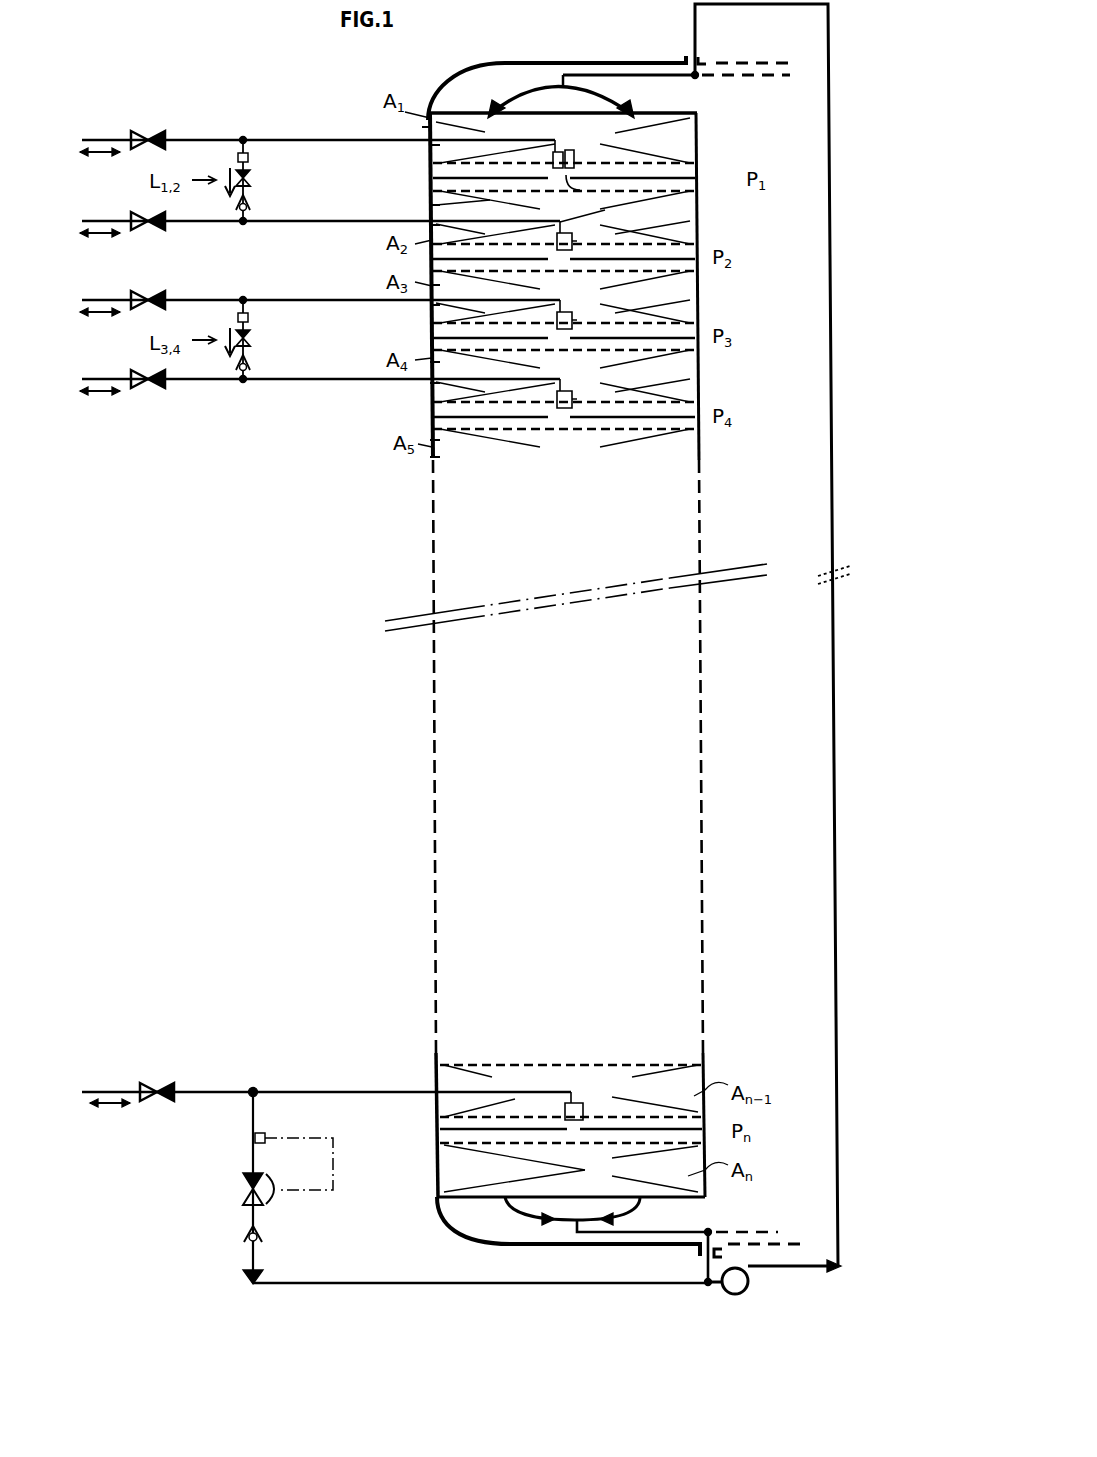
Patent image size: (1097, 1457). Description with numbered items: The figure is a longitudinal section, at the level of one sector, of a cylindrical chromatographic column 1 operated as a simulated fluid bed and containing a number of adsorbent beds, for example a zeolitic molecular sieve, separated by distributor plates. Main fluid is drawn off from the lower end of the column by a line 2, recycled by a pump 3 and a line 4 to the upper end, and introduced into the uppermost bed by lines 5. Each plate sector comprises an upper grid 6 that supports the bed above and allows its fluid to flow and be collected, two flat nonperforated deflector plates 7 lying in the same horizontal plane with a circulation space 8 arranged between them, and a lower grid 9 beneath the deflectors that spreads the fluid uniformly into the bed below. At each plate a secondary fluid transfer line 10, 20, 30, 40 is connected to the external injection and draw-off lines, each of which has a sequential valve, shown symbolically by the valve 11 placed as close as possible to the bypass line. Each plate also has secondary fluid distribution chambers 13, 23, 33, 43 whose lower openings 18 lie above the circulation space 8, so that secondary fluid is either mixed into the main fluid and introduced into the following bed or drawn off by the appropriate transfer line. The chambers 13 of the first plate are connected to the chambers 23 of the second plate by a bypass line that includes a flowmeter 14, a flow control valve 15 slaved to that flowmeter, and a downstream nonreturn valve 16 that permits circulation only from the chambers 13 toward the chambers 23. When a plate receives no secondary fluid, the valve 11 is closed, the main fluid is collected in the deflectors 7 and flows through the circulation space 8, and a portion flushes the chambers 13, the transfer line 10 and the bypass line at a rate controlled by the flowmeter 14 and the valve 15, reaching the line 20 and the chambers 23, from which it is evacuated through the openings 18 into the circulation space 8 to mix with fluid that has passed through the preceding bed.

The chromatographic column 1 is at (310, 775).
The line 2 is at (706, 1268).
The pump 3 is at (745, 1290).
The line 4 is at (682, 7).
The lines 5 is at (598, 90).
The upper grid 6 is at (475, 156).
The deflector plates 7 is at (655, 150).
The circulation space 8 is at (672, 198).
The lower grid 9 is at (470, 203).
The secondary fluid transfer line 10 is at (181, 140).
The valve 11 is at (120, 138).
The distribution chambers 13 is at (553, 158).
The flowmeter 14 is at (250, 157).
The valve 15 is at (250, 178).
The nonreturn valve 16 is at (252, 205).
The openings 18 is at (566, 150).
The secondary fluid transfer line 20 is at (180, 222).
The distribution chambers 23 is at (697, 232).
The secondary fluid transfer line 30 is at (213, 300).
The distribution chambers 33 is at (698, 312).
The secondary fluid transfer line 40 is at (176, 381).
The distribution chambers 43 is at (698, 392).